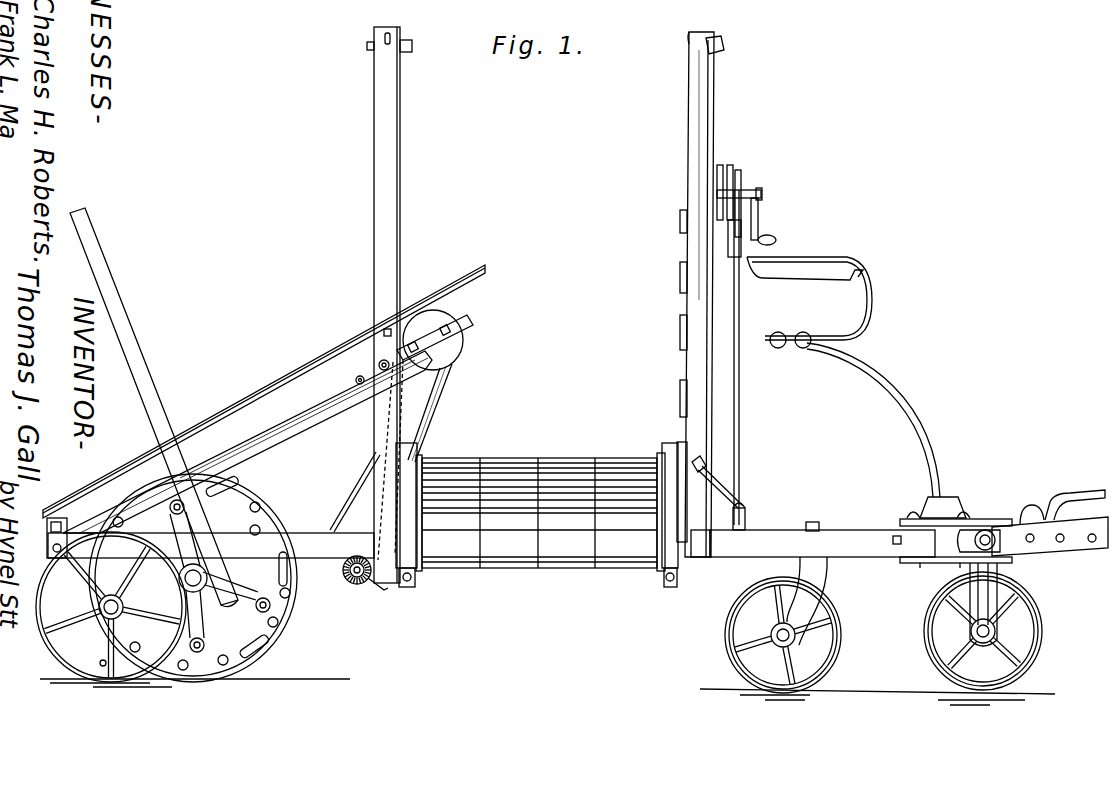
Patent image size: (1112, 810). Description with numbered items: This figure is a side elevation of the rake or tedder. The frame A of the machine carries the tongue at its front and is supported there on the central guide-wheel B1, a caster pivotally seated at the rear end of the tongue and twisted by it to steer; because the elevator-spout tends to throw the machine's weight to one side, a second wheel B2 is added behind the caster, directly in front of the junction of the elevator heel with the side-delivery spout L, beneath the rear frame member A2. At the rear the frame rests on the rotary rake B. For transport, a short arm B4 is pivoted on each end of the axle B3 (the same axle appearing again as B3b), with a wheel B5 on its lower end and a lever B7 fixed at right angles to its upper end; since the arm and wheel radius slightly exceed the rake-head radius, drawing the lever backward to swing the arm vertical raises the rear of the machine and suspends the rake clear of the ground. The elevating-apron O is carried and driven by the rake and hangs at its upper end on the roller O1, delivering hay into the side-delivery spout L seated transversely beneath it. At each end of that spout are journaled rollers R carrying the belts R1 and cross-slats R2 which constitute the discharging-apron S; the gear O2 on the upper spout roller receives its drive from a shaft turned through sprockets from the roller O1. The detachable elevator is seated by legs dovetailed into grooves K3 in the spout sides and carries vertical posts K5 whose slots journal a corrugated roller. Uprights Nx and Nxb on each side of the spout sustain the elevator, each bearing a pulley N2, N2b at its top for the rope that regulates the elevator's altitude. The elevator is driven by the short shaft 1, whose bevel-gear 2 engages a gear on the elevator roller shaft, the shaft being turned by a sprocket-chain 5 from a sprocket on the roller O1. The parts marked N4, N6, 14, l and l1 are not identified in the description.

The upright Nx is at (400, 115).
The pulley N2 is at (412, 47).
The pulley N2b is at (721, 44).
The upright Nxb is at (712, 110).
The adjusting rods and crank N4 is at (721, 163).
The crank guide N6 is at (726, 237).
The rear frame beam A2 is at (851, 543).
The second wheel B2 is at (836, 637).
The central guide-wheel B1 is at (1040, 628).
The frame A is at (211, 546).
The axle B3 is at (73, 515).
The axle B3b is at (201, 573).
The short arm B4 is at (111, 607).
The wheel B5 is at (92, 642).
The rotary rake B is at (288, 612).
The lever B7 is at (160, 404).
The gear O2 is at (264, 391).
The bolt on inclined bar 14 is at (356, 381).
The roller O1 is at (448, 352).
The sprocket-chain 5 is at (432, 425).
The elevating-apron O is at (345, 512).
The short shaft 1 is at (356, 584).
The bevel-gear 2 is at (378, 587).
The side-delivery spout L is at (539, 502).
The roller R is at (494, 513).
The cross-slats R2 is at (520, 513).
The belts R1 is at (422, 523).
The slat l is at (540, 546).
The slat l1 is at (452, 461).
The discharging-apron S is at (540, 523).
The grooves K3 is at (404, 590).
The vertical posts K5 is at (672, 590).